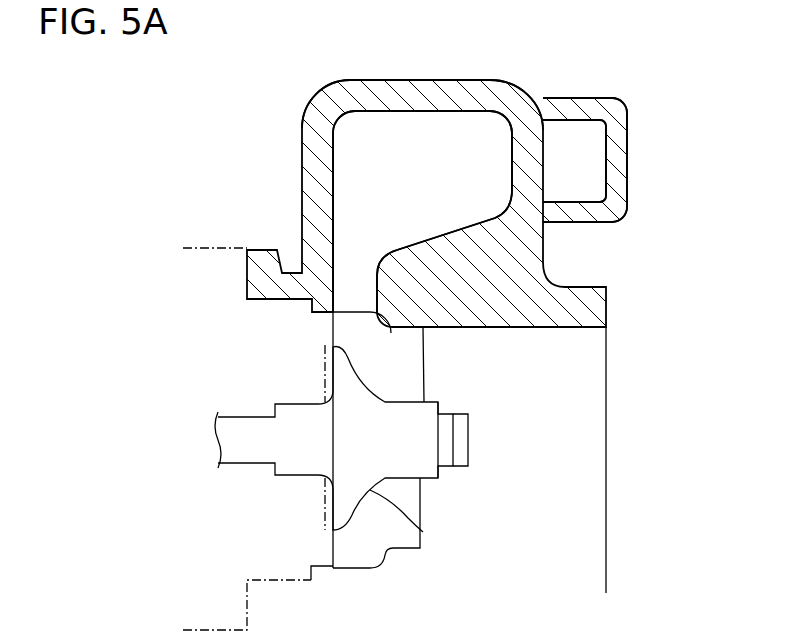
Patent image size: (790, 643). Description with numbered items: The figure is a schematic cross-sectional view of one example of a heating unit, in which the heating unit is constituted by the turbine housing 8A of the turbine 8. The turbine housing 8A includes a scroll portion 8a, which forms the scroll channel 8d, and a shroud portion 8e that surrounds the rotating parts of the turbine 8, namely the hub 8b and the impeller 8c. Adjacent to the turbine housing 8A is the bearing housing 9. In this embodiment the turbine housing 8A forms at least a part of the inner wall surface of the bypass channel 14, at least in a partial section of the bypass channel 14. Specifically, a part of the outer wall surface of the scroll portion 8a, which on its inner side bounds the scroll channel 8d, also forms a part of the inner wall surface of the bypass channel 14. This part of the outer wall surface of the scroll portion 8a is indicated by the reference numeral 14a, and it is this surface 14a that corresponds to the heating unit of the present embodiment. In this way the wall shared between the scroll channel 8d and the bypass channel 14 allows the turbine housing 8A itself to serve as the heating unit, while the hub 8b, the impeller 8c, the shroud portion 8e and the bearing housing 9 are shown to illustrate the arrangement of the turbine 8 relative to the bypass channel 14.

The turbine 8 is at (229, 129).
The turbine housing 8A is at (628, 88).
The scroll portion 8a is at (424, 80).
The hub 8b is at (423, 532).
The impeller 8c is at (424, 505).
The scroll channel 8d is at (428, 175).
The shroud portion 8e is at (445, 302).
The bearing housing 9 is at (204, 247).
The bypass channel 14 is at (588, 165).
The part of the outer wall surface of the scroll portion 14a is at (545, 178).